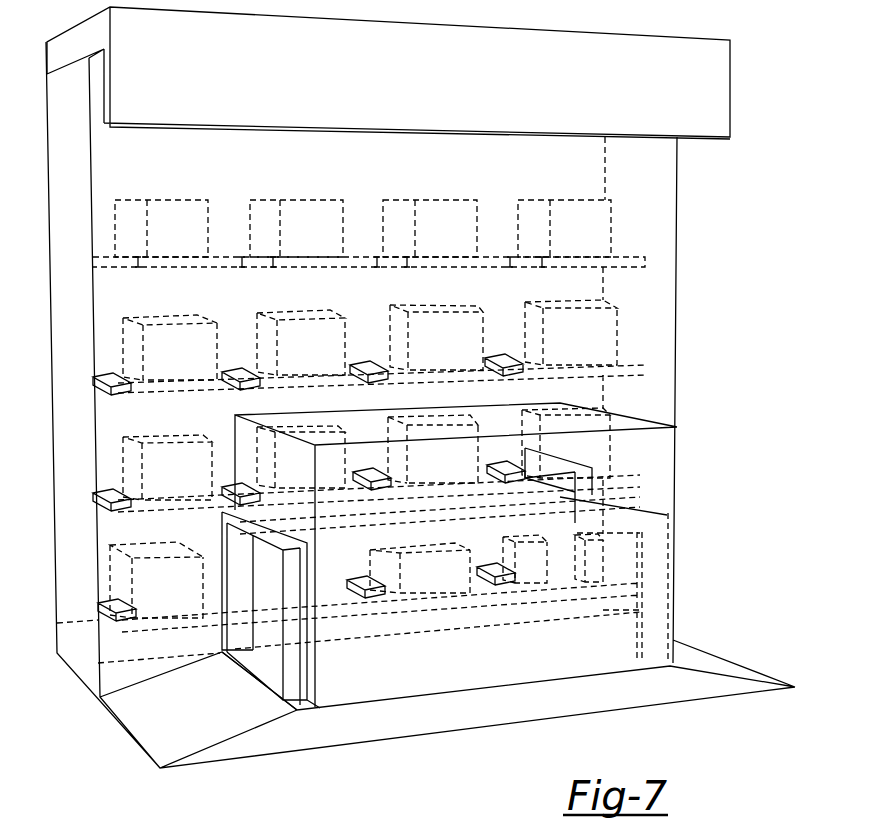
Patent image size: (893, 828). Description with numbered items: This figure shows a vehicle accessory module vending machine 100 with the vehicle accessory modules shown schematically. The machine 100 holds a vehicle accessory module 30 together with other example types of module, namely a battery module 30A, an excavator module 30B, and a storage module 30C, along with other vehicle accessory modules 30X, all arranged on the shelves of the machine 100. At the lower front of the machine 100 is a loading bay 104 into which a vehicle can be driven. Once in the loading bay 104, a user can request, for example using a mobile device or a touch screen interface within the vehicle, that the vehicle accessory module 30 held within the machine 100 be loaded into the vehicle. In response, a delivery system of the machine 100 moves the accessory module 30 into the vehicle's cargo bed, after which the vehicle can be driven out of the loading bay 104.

The vehicle accessory module 30 is at (189, 240).
The other vehicle accessory modules 30X is at (326, 240).
The battery module 30A is at (190, 365).
The excavator module 30B is at (187, 484).
The storage module 30C is at (179, 600).
The accessory module vending machine 100 is at (747, 203).
The loading bay 104 is at (722, 564).